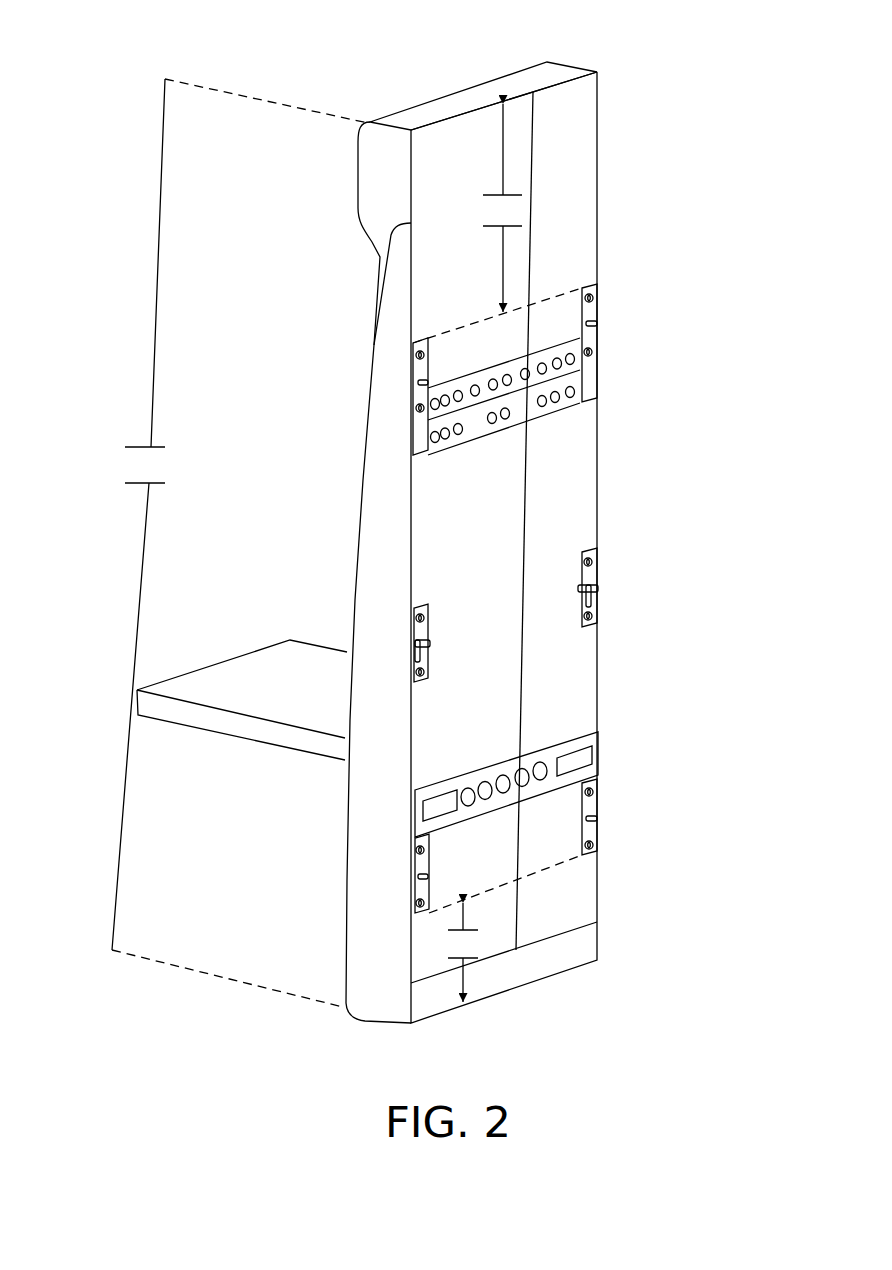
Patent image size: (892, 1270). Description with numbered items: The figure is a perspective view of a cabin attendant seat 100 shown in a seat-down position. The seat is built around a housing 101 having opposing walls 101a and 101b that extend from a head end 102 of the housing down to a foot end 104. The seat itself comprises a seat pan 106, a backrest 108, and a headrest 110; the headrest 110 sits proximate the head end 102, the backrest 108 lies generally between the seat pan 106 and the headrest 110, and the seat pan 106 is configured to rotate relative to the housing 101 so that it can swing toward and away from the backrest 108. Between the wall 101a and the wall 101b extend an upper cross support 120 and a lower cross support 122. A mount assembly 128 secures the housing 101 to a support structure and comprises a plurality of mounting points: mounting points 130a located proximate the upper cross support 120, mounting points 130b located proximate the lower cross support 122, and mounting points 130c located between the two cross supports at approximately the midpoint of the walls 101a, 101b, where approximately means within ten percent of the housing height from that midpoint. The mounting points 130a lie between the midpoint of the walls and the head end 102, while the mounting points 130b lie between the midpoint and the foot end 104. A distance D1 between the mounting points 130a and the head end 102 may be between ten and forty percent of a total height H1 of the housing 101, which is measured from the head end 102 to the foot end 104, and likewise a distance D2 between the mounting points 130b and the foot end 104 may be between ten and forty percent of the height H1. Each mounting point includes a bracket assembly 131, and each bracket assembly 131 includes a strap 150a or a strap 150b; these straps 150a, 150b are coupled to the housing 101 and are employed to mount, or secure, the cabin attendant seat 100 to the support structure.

The cabin attendant seat 100 is at (273, 80).
The housing 101 is at (588, 83).
The wall 101a is at (363, 569).
The wall 101b is at (538, 511).
The head end 102 is at (482, 93).
The foot end 104 is at (525, 985).
The seat pan 106 is at (256, 689).
The backrest 108 is at (369, 380).
The headrest 110 is at (363, 185).
The upper cross support 120 is at (485, 412).
The lower cross support 122 is at (496, 775).
The mount assembly 128 is at (676, 275).
The mounting points 130a is at (425, 341).
The mounting points 130b is at (412, 836).
The mounting points 130c is at (430, 622).
The bracket assembly 131 is at (614, 290).
The strap 150a is at (595, 345).
The strap 150b is at (597, 612).
The distance D1 is at (502, 208).
The distance D2 is at (463, 952).
The total height H1 is at (145, 465).